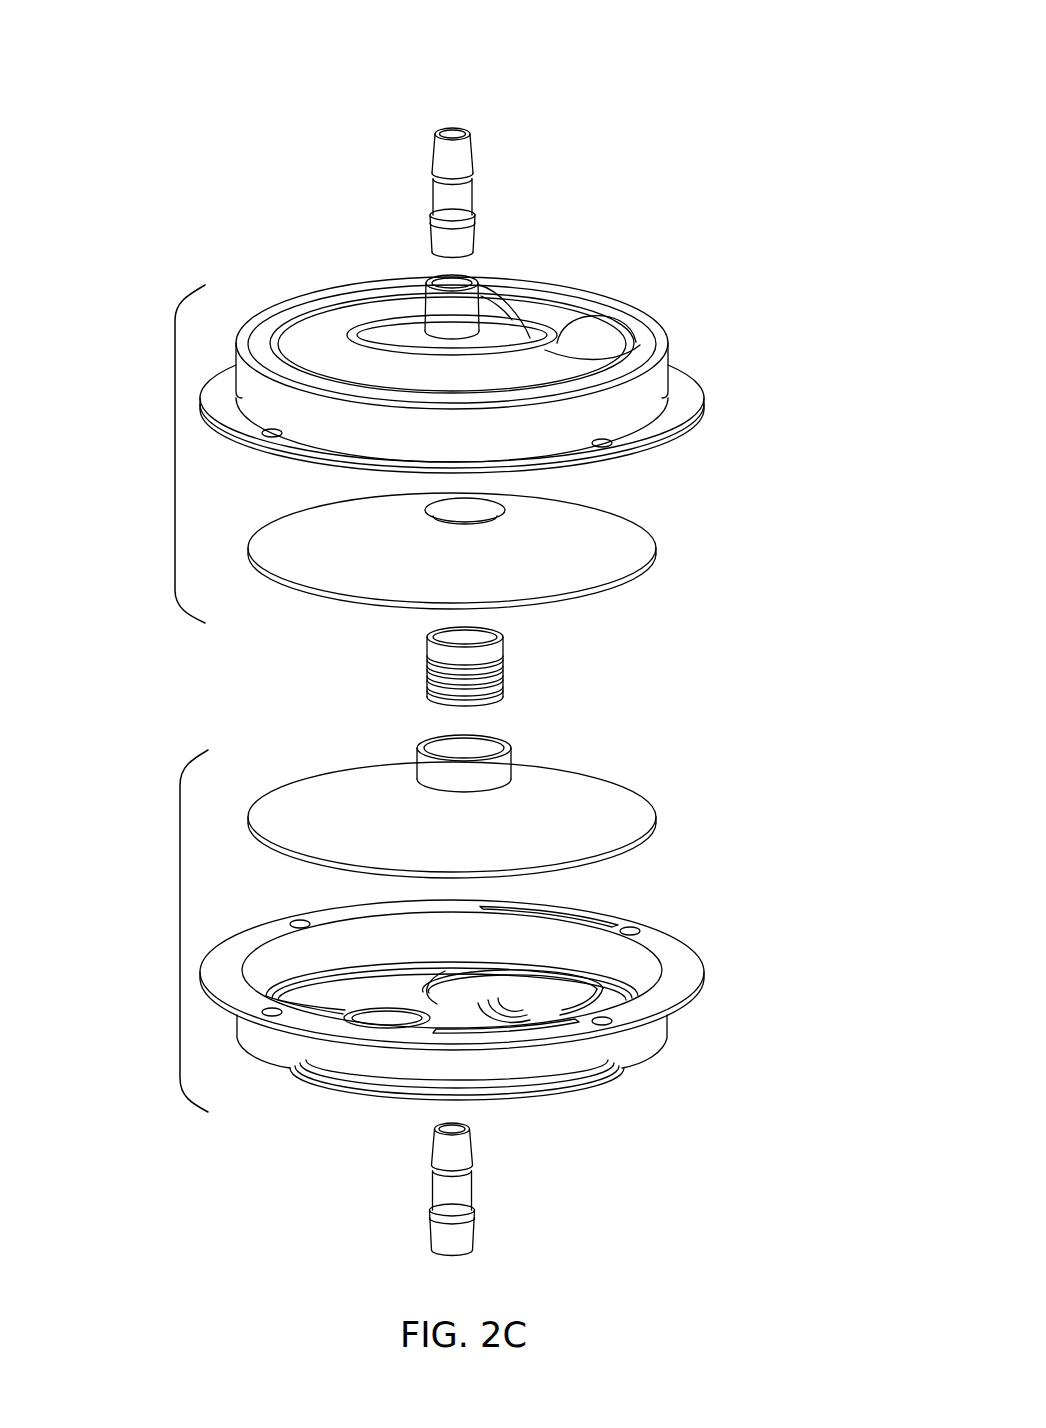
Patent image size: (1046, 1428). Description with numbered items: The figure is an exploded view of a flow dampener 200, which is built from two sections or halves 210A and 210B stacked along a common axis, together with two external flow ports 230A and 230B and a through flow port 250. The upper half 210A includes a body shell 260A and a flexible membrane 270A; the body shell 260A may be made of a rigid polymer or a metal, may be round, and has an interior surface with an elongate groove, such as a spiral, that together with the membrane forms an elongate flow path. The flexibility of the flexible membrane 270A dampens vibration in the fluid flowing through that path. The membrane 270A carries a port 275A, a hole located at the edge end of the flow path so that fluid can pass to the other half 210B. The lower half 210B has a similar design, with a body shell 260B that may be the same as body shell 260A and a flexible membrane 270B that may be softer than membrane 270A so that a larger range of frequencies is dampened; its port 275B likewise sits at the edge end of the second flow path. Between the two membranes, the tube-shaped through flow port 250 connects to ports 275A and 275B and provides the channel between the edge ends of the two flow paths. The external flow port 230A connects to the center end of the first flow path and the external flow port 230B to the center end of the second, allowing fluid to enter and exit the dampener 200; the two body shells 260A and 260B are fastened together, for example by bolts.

The flow dampener 200 is at (475, 28).
The half 210A is at (175, 453).
The other half 210B is at (180, 930).
The external flow port 230A is at (476, 160).
The external flow port 230B is at (475, 1185).
The through flow port 250 is at (503, 650).
The body shell 260A is at (617, 325).
The body shell 260B is at (647, 1007).
The flexible membrane 270A is at (535, 530).
The flexible membrane 270B is at (531, 792).
The port 275A is at (483, 505).
The port 275B is at (513, 757).